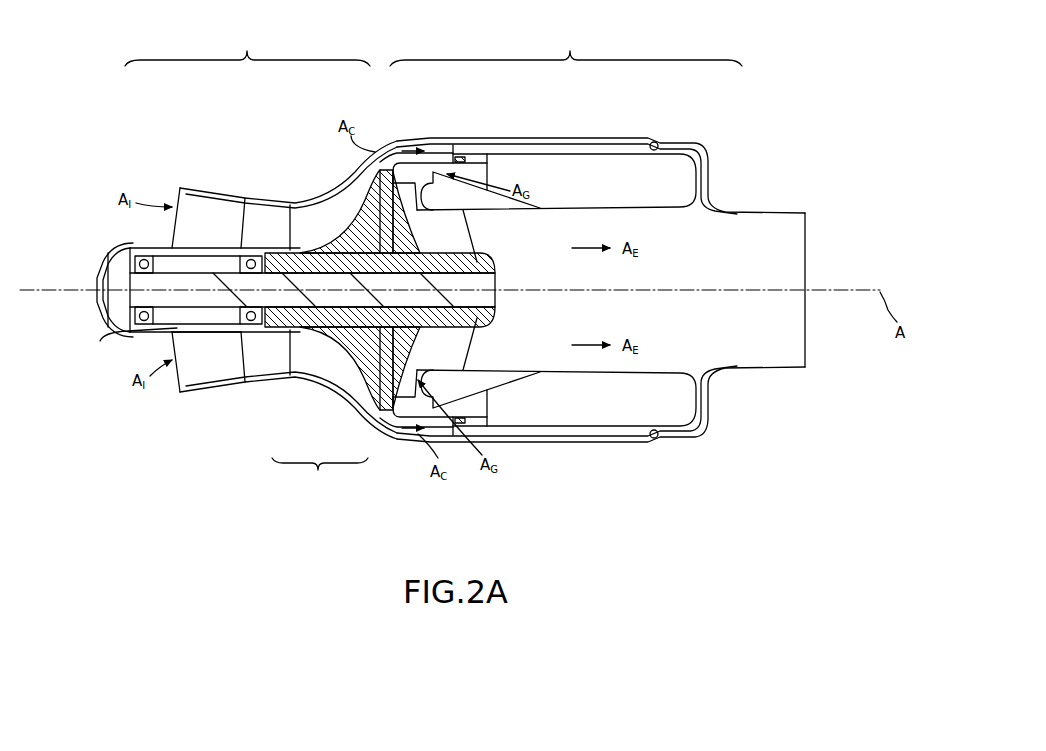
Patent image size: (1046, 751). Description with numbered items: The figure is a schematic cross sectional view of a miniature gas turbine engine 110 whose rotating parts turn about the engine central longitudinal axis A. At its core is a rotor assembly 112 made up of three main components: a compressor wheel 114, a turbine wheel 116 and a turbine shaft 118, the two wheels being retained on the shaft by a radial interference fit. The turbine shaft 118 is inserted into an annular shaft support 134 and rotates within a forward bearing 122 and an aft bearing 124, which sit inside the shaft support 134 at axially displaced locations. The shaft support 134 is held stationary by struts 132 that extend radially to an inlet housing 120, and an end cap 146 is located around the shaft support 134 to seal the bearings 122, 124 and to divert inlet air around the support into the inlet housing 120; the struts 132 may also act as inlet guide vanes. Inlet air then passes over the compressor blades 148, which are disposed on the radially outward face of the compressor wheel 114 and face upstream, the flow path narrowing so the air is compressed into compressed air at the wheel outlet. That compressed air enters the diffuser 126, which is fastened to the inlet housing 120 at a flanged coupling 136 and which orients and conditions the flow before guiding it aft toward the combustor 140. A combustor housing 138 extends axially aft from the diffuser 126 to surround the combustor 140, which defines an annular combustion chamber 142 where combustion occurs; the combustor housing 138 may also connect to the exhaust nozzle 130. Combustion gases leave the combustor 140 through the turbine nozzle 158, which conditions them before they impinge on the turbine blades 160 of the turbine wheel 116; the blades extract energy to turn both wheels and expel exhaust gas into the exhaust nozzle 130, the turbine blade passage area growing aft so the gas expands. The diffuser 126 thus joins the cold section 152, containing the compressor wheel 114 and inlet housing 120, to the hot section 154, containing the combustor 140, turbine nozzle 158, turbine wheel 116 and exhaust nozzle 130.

The miniature gas turbine engine 110 is at (86, 92).
The rotor assembly 112 is at (320, 477).
The compressor wheel 114 is at (325, 308).
The turbine wheel 116 is at (388, 345).
The turbine shaft 118 is at (352, 328).
The inlet housing 120 is at (208, 188).
The forward bearing 122 is at (126, 344).
The aft bearing 124 is at (240, 340).
The diffuser 126 is at (418, 140).
The exhaust nozzle 130 is at (762, 370).
The struts 132 is at (272, 290).
The shaft support 134 is at (175, 330).
The flanged coupling 136 is at (373, 141).
The combustor housing 138 is at (547, 137).
The combustor 140 is at (598, 155).
The combustion chamber 142 is at (556, 290).
The end cap 146 is at (100, 282).
The compressor blades 148 is at (375, 290).
The cold section 152 is at (247, 46).
The hot section 154 is at (566, 46).
The turbine nozzle 158 is at (472, 172).
The turbine blades 160 is at (466, 290).